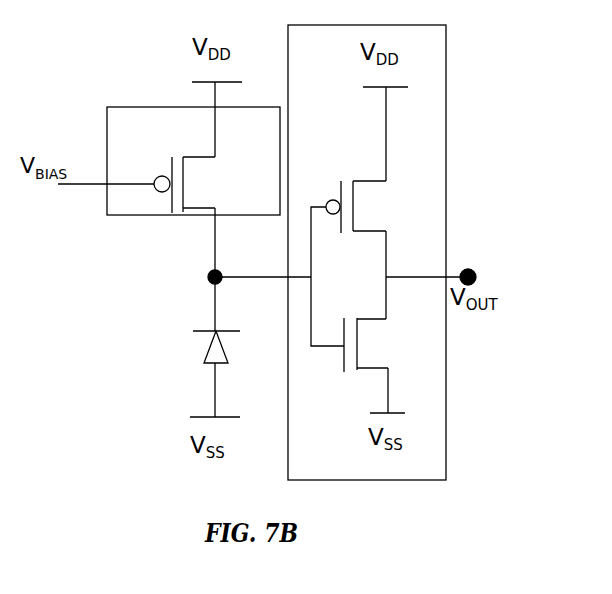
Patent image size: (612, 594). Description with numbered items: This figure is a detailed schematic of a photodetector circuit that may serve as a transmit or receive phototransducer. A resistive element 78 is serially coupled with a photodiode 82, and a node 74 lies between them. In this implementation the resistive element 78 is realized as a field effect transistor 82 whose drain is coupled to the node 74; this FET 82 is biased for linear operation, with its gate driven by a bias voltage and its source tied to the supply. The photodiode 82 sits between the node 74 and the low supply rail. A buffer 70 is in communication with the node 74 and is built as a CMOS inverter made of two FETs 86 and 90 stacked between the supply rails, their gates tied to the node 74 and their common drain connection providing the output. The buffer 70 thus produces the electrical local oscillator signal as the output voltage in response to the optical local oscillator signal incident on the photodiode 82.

The buffer 70 is at (447, 100).
The node 74 is at (222, 274).
The resistive element 78 is at (107, 133).
The photodiode 82 is at (222, 177).
The FET 86 is at (392, 208).
The FET 90 is at (394, 345).